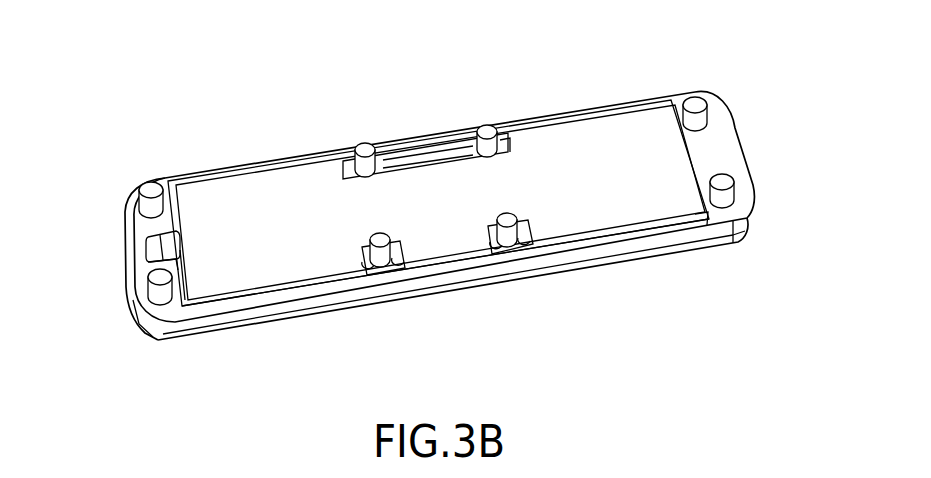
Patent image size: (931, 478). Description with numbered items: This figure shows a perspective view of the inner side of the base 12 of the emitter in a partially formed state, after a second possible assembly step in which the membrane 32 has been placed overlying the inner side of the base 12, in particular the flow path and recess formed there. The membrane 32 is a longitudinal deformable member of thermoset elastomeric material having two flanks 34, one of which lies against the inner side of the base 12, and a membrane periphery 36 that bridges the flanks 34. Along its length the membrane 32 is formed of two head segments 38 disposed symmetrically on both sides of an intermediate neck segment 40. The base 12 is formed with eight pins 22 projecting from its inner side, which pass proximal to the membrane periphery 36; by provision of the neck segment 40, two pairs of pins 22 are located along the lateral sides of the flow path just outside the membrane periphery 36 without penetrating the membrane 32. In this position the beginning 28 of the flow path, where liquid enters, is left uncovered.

The base 12 is at (724, 254).
The pins 22 is at (158, 292).
The beginning 28 is at (160, 242).
The membrane 32 is at (558, 162).
The flanks 34 is at (630, 128).
The membrane periphery 36 is at (470, 233).
The head segments 38 is at (263, 259).
The neck segment 40 is at (432, 219).